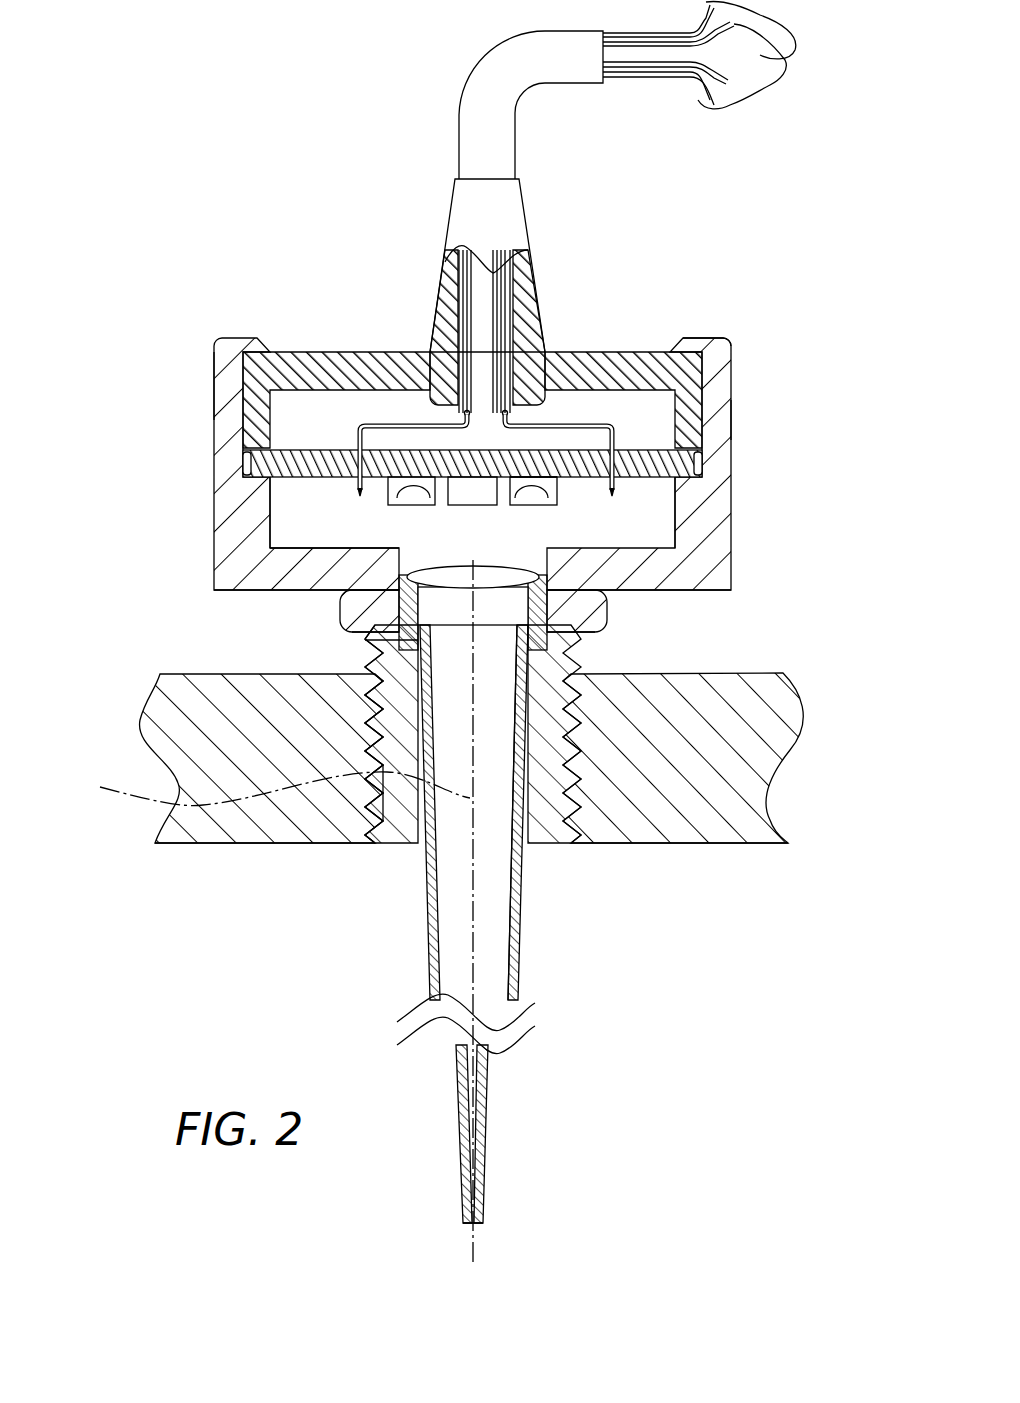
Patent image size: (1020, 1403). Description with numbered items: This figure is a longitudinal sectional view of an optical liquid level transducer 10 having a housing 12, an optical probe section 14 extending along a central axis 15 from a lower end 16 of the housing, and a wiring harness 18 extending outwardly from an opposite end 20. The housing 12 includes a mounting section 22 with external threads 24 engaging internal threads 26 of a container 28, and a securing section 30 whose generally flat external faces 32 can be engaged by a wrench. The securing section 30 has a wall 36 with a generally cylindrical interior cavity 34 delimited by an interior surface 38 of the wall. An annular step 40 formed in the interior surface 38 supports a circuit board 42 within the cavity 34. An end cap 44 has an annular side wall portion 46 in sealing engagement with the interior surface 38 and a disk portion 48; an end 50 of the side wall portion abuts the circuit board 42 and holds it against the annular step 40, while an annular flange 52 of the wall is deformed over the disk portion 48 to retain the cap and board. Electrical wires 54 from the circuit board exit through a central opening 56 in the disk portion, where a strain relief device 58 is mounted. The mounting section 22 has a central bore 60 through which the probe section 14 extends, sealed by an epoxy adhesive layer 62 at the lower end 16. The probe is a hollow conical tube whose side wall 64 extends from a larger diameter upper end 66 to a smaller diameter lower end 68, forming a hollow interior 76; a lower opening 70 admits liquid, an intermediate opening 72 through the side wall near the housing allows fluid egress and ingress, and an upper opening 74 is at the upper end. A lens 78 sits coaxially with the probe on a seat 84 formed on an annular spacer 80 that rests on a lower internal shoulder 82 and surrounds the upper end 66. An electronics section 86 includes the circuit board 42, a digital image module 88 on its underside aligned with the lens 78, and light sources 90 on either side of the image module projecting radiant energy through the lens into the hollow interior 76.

The optical liquid level transducer 10 is at (230, 175).
The housing 12 is at (210, 422).
The optical probe section 14 is at (466, 911).
The central axis 15 is at (270, 789).
The lower end 16 is at (547, 848).
The wiring harness 18 is at (458, 100).
The opposite end 20 is at (500, 356).
The mounting section 22 is at (620, 692).
The external threads 24 is at (390, 832).
The internal threads 26 is at (355, 830).
The container 28 is at (255, 845).
The securing section 30 is at (731, 420).
The external faces 32 is at (218, 478).
The interior cavity 34 is at (312, 415).
The wall 36 is at (227, 390).
The interior surface 38 is at (270, 525).
The annular step 40 is at (245, 456).
The circuit board 42 is at (640, 450).
The end cap 44 is at (632, 355).
The annular side wall portion 46 is at (710, 390).
The disk portion 48 is at (410, 335).
The end 50 is at (703, 465).
The annular flange 52 is at (318, 348).
The electrical wires 54 is at (760, 42).
The central opening 56 is at (543, 372).
The strain relief device 58 is at (515, 213).
The central bore 60 is at (541, 780).
The epoxy adhesive layer 62 is at (425, 870).
The side wall 64 is at (433, 936).
The upper end 66 is at (546, 628).
The lower end 68 is at (480, 1200).
The lower opening 70 is at (473, 1243).
The intermediate opening 72 is at (513, 905).
The upper opening 74 is at (398, 632).
The hollow interior 76 is at (483, 937).
The lens 78 is at (503, 575).
The annular spacer 80 is at (362, 601).
The lower internal shoulder 82 is at (396, 650).
The seat 84 is at (528, 605).
The electronics section 86 is at (650, 492).
The digital image module 88 is at (460, 503).
The light sources 90 is at (412, 502).